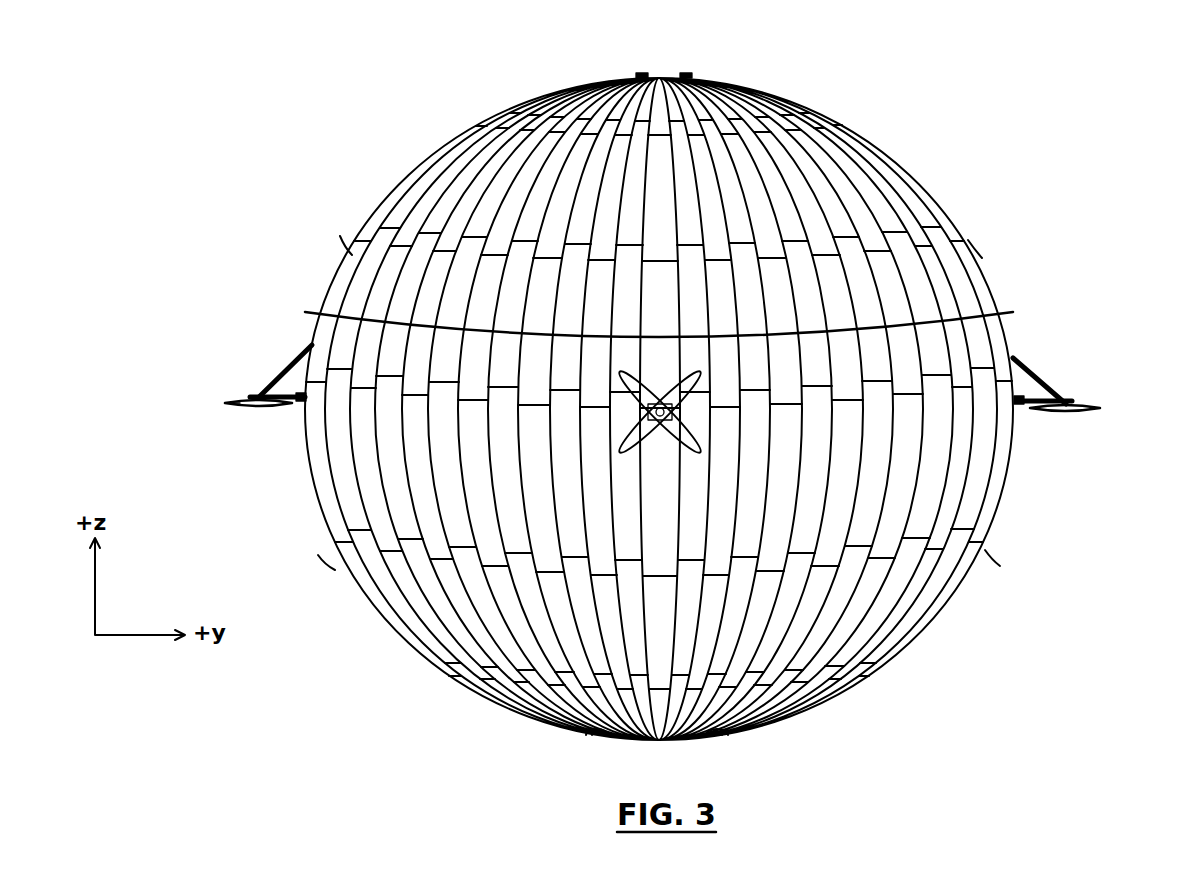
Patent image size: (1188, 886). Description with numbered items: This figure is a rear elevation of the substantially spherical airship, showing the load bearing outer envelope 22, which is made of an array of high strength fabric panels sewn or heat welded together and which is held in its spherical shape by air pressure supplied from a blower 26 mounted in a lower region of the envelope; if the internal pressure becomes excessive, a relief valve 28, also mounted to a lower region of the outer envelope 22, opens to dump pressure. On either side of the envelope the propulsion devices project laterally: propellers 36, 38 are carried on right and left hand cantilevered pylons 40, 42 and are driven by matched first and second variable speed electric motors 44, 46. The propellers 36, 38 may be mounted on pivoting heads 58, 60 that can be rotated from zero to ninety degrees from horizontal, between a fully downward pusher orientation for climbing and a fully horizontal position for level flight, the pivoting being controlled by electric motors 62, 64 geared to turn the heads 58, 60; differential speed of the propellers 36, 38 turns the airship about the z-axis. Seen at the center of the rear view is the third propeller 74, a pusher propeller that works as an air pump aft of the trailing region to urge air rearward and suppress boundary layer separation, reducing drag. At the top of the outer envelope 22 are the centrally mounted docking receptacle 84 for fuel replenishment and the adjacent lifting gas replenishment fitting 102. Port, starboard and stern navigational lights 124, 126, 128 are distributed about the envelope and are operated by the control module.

The outer envelope 22 is at (410, 622).
The blower 26 is at (760, 730).
The relief valve 28 is at (812, 722).
The propeller 36 is at (1100, 408).
The propeller 38 is at (232, 406).
The cantilevered pylon 40 is at (1018, 356).
The cantilevered pylon 42 is at (282, 385).
The variable speed electric motor 44 is at (1066, 402).
The variable speed electric motor 46 is at (250, 400).
The pivoting head 58 is at (1046, 397).
The pivoting head 60 is at (265, 394).
The electric motor 62 is at (1030, 408).
The electric motor 64 is at (298, 402).
The third propeller 74 is at (625, 446).
The docking receptacle 84 is at (686, 73).
The replenishment fitting 102 is at (644, 73).
The port navigational light 124 is at (346, 246).
The starboard navigational light 126 is at (972, 246).
The stern navigational light 128 is at (660, 229).